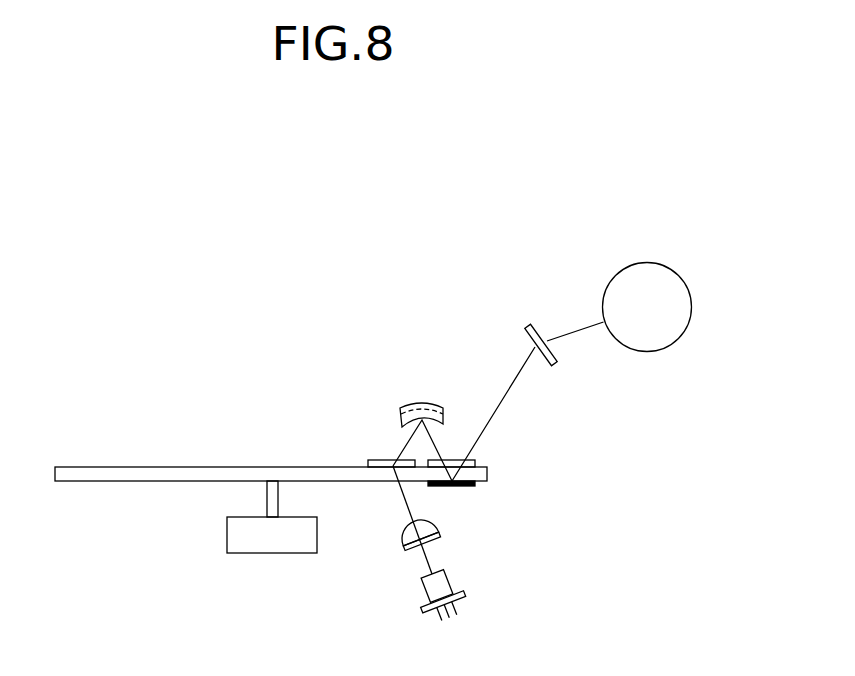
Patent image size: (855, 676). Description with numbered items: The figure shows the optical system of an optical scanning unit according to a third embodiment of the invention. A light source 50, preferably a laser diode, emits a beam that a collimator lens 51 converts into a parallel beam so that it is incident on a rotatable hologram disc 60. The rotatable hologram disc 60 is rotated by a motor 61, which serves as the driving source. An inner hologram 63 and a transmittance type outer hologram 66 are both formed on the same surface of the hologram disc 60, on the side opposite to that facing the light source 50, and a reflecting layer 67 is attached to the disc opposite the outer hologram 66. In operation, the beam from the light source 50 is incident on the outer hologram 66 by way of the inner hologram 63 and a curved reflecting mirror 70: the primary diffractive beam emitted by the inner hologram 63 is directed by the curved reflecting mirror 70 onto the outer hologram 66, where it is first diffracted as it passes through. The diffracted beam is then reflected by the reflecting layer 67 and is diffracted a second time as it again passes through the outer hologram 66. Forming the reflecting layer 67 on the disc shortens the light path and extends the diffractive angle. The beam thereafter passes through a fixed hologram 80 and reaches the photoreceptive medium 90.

The light source 50 is at (445, 587).
The collimator lens 51 is at (432, 533).
The rotatable hologram disc 60 is at (73, 475).
The motor 61 is at (235, 537).
The inner hologram 63 is at (374, 458).
The outer hologram 66 is at (473, 454).
The reflecting layer 67 is at (473, 485).
The curved reflecting mirror 70 is at (422, 403).
The fixed hologram 80 is at (533, 327).
The photoreceptive medium 90 is at (638, 267).